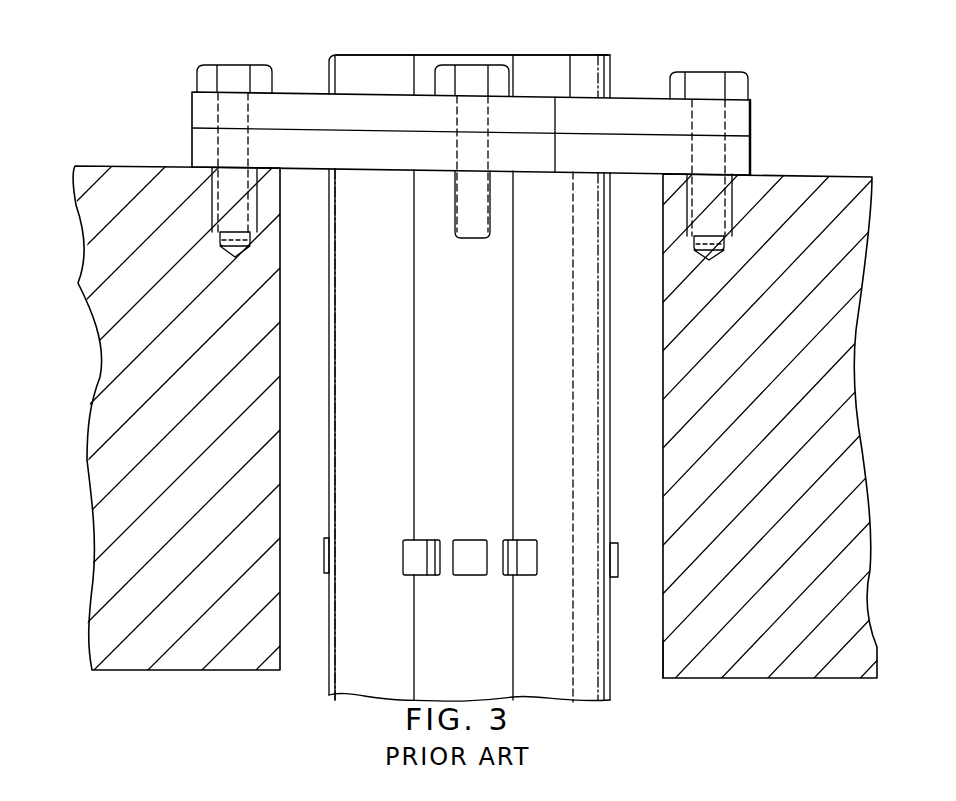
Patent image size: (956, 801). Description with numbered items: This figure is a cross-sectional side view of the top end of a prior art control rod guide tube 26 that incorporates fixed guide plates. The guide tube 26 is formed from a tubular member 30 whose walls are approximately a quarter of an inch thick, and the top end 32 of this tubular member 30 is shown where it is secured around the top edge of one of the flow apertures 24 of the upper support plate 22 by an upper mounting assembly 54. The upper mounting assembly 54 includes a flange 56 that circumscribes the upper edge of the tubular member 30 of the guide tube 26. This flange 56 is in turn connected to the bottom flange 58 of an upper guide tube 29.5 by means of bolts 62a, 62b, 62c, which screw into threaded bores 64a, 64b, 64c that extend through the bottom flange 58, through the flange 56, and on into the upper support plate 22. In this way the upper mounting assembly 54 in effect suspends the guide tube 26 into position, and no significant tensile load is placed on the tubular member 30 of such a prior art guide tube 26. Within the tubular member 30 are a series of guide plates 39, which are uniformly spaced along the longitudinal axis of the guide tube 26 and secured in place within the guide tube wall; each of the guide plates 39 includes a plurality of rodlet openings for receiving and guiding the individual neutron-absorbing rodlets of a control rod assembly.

The control rod guide tube 26 is at (117, 120).
The upper mounting assembly 54 is at (173, 158).
The bottom flange 58 is at (321, 115).
The flange 56 is at (745, 160).
The upper guide tube 29.5 is at (580, 67).
The bolt 62a is at (197, 72).
The bolt 62b is at (502, 85).
The bolt 62c is at (742, 83).
The threaded bore 64a is at (222, 210).
The threaded bore 64b is at (480, 212).
The threaded bore 64c is at (720, 222).
The top end 32 is at (317, 176).
The tubular member 30 is at (612, 398).
The upper support plate 22 is at (690, 498).
The guide plates 39 is at (525, 562).
The flow aperture 24 is at (663, 643).